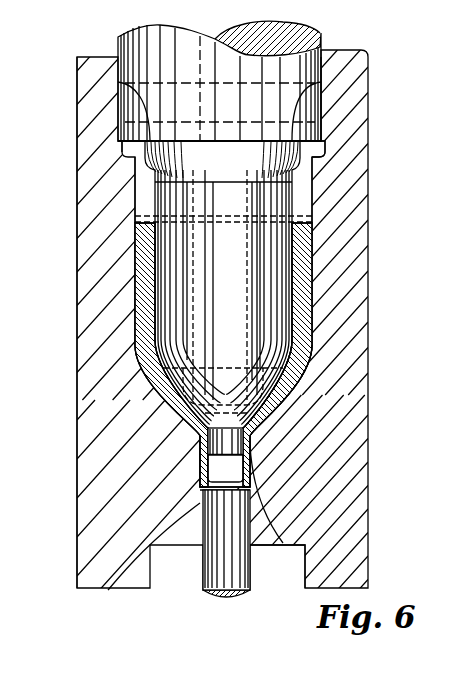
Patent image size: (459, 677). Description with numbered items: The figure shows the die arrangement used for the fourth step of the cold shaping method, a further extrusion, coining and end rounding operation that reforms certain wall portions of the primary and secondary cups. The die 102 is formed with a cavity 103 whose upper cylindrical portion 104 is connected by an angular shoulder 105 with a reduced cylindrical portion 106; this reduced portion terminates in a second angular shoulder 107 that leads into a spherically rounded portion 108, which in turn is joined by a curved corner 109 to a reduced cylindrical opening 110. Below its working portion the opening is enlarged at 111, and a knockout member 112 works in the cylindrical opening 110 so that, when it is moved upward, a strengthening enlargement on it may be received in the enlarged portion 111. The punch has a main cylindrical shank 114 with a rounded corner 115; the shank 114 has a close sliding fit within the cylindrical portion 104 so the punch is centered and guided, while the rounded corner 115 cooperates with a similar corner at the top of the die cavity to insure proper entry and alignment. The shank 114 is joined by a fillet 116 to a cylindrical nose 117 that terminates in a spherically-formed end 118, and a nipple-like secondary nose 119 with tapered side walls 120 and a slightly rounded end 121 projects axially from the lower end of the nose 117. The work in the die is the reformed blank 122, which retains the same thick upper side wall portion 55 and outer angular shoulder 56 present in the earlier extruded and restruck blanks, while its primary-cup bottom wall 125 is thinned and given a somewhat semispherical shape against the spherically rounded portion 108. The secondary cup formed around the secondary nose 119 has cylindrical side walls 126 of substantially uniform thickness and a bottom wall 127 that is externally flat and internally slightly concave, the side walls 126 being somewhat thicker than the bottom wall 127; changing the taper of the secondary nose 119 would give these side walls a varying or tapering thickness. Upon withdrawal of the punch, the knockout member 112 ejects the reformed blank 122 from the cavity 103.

The die 102 is at (343, 70).
The cavity 103 is at (318, 97).
The upper cylindrical portion 104 is at (318, 145).
The angular shoulder 105 is at (313, 157).
The reduced cylindrical portion 106 is at (313, 190).
The angular shoulder 107 is at (308, 350).
The spherically rounded portion 108 is at (290, 403).
The curved corner 109 is at (252, 435).
The reduced cylindrical opening 110 is at (255, 468).
The enlarged portion 111 is at (305, 553).
The knockout member 112 is at (214, 584).
The main cylindrical shank 114 is at (137, 58).
The rounded corner 115 is at (124, 132).
The fillet 116 is at (152, 182).
The cylindrical nose 117 is at (175, 207).
The spherically-formed end 118 is at (200, 222).
The secondary nose 119 is at (282, 414).
The tapered side walls 120 is at (200, 455).
The rounded end 121 is at (203, 472).
The reformed blank 122 is at (302, 270).
The bottom wall 125 is at (207, 450).
The cylindrical side walls 126 is at (250, 450).
The bottom wall 127 is at (110, 590).
The thick upper side wall portion 55 is at (147, 250).
The outer angular shoulder 56 is at (80, 342).